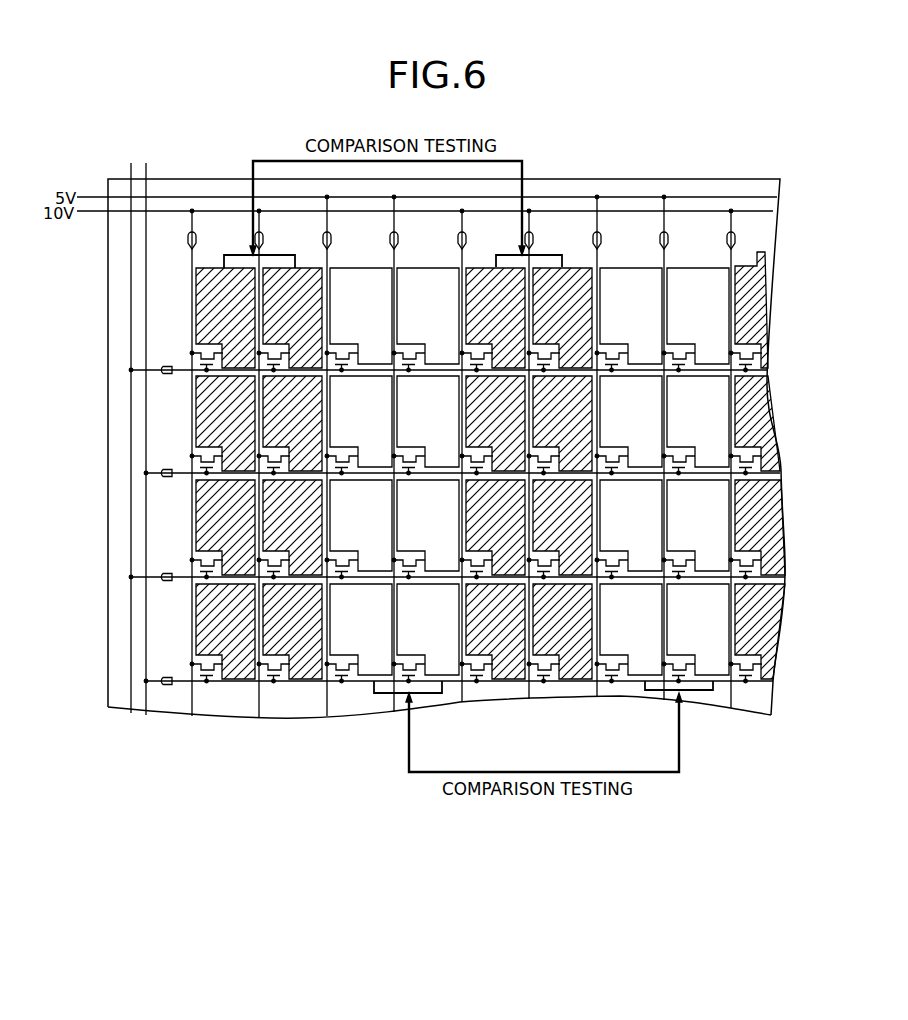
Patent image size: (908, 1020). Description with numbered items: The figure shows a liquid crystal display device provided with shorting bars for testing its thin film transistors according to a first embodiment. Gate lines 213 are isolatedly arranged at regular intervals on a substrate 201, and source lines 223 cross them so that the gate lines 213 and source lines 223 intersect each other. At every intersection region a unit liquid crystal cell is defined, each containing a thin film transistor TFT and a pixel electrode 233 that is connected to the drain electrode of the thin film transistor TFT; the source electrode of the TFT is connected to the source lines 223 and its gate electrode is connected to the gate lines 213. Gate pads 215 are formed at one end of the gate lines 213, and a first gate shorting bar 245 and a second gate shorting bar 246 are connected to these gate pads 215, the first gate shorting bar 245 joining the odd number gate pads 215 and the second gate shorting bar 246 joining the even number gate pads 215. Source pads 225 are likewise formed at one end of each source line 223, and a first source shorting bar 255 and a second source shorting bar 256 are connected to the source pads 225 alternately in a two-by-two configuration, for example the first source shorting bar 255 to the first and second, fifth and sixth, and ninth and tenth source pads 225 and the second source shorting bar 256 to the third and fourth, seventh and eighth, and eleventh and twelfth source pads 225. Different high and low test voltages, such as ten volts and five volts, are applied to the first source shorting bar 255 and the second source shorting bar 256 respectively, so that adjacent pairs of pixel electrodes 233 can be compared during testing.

The substrate 201 is at (728, 164).
The gate lines 213 is at (769, 378).
The gate pads 215 is at (165, 366).
The source lines 223 is at (189, 706).
The source pads 225 is at (197, 238).
The pixel electrode 233 is at (762, 292).
The first gate shorting bar 245 is at (131, 256).
The second gate shorting bar 246 is at (146, 295).
The first source shorting bar 255 is at (168, 211).
The second source shorting bar 256 is at (217, 197).
The thin film transistor TFT is at (768, 432).